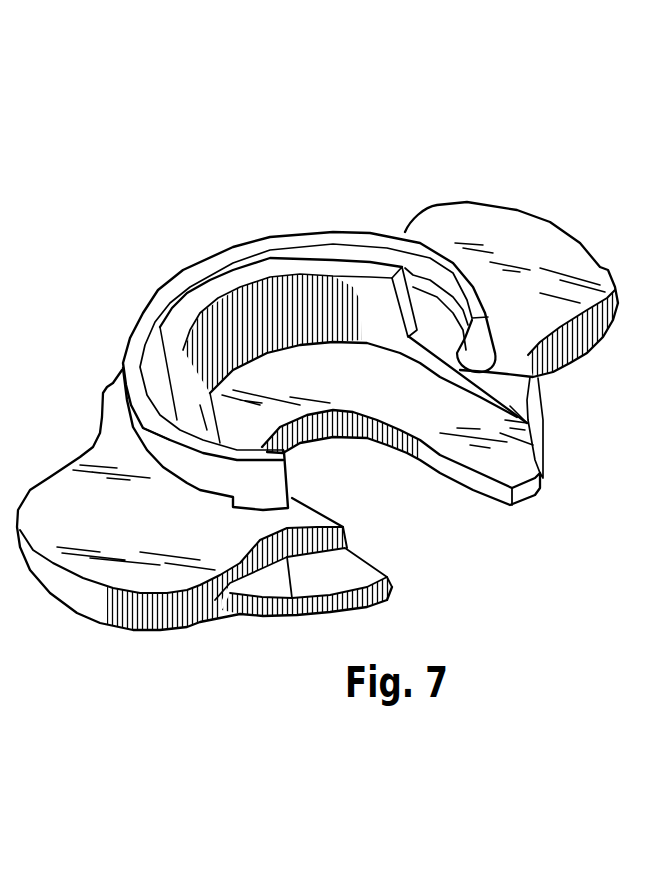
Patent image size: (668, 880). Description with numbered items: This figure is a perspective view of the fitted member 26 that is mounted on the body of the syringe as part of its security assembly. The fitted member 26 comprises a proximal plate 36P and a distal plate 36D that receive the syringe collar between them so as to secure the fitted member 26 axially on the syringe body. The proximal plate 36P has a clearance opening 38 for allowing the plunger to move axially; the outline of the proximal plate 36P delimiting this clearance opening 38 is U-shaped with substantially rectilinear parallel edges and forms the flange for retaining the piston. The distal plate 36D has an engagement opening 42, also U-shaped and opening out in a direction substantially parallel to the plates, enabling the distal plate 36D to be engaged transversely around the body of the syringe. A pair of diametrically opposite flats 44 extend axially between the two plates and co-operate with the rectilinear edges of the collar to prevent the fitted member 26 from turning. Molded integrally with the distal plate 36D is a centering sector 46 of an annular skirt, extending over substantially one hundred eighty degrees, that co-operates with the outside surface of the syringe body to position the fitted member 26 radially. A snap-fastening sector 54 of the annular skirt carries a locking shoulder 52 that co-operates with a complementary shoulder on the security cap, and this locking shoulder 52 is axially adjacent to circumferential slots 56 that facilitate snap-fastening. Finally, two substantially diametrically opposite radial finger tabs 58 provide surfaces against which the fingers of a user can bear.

The fitted member 26 is at (415, 178).
The distal plate 36D is at (436, 338).
The proximal plate 36P is at (520, 458).
The clearance opening 38 is at (483, 483).
The engagement opening 42 is at (534, 420).
The flats 44 is at (308, 585).
The centering sector 46 is at (247, 292).
The locking shoulder 52 is at (550, 380).
The snap-fastening sector 54 is at (427, 253).
The circumferential slots 56 is at (183, 484).
The radial finger tabs 58 is at (584, 258).